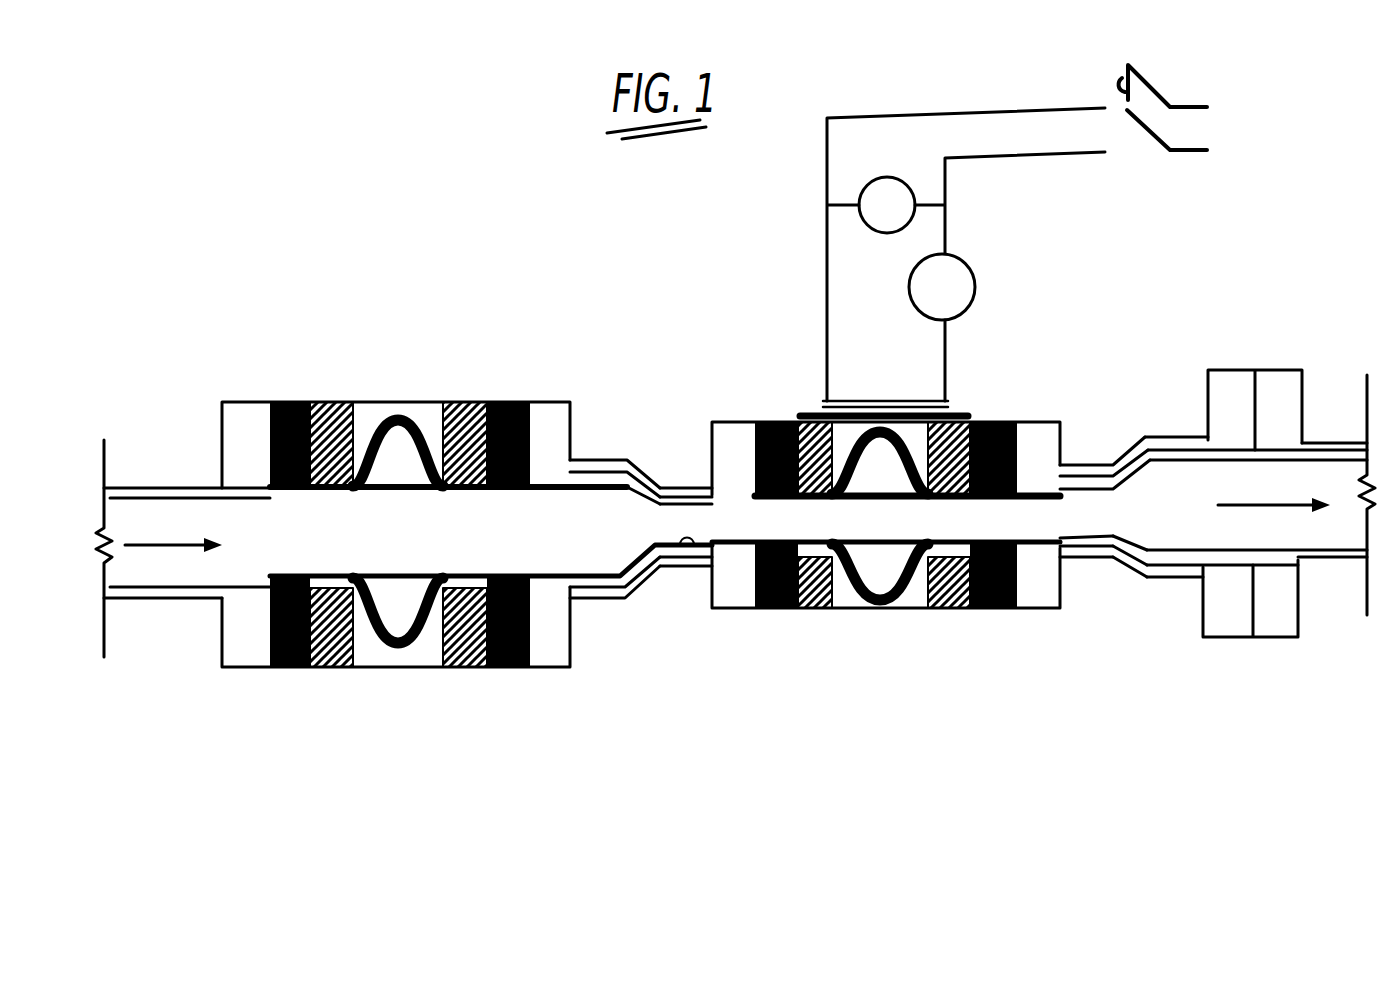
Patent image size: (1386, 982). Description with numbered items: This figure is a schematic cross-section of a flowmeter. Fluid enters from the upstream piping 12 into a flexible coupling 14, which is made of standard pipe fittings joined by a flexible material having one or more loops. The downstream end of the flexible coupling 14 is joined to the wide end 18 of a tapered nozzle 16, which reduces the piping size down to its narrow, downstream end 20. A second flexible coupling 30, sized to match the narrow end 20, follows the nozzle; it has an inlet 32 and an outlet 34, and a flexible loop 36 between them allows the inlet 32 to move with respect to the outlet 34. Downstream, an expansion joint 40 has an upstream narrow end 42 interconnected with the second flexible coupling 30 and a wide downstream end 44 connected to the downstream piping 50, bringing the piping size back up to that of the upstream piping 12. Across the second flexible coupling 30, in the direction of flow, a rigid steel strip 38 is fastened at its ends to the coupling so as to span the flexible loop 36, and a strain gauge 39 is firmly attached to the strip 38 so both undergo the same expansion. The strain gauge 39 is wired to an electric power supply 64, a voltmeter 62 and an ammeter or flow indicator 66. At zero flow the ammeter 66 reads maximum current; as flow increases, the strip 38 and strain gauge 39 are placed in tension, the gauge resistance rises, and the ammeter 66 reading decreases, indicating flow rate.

The upstream piping 12 is at (193, 476).
The flexible coupling 14 is at (535, 368).
The tapered nozzle 16 is at (645, 610).
The wide end 18 is at (600, 452).
The narrow, downstream end 20 is at (683, 472).
The second flexible coupling 30 is at (886, 544).
The inlet 32 is at (687, 547).
The outlet 34 is at (1098, 521).
The flexible loop 36 is at (853, 585).
The rigid strip 38 is at (797, 408).
The strain gauge 39 is at (878, 400).
The expansion joint 40 is at (1120, 610).
The upstream narrow end 42 is at (1090, 462).
The wide downstream end 44 is at (1173, 437).
The downstream piping 50 is at (1330, 560).
The voltmeter 62 is at (869, 180).
The electric power supply 64 is at (1233, 116).
The ammeter or flow indicator 66 is at (973, 268).